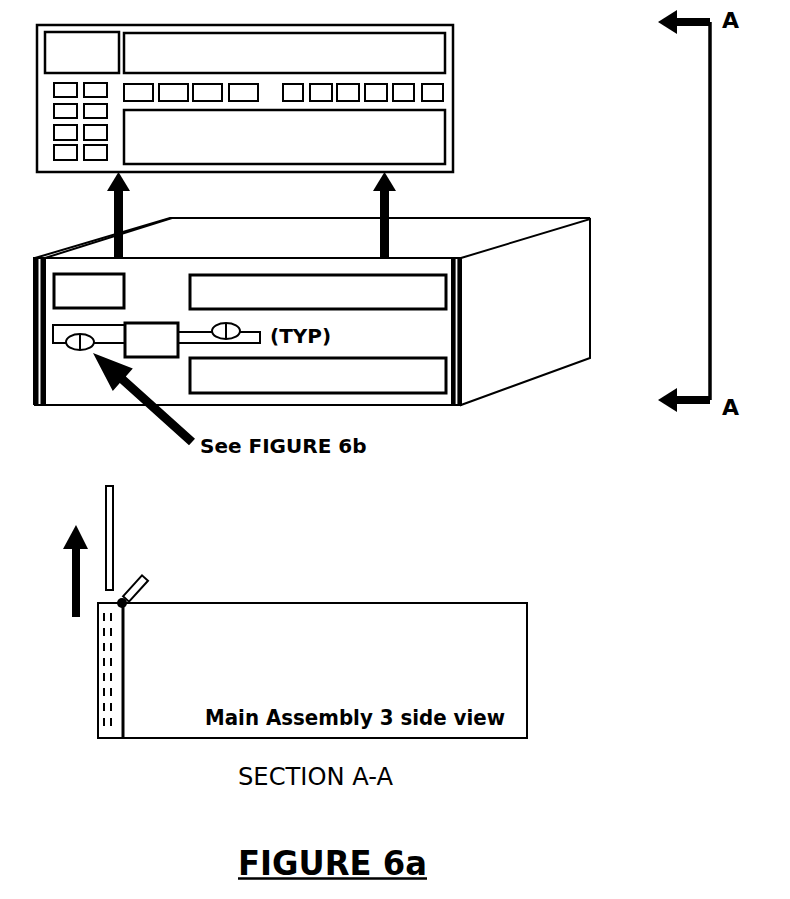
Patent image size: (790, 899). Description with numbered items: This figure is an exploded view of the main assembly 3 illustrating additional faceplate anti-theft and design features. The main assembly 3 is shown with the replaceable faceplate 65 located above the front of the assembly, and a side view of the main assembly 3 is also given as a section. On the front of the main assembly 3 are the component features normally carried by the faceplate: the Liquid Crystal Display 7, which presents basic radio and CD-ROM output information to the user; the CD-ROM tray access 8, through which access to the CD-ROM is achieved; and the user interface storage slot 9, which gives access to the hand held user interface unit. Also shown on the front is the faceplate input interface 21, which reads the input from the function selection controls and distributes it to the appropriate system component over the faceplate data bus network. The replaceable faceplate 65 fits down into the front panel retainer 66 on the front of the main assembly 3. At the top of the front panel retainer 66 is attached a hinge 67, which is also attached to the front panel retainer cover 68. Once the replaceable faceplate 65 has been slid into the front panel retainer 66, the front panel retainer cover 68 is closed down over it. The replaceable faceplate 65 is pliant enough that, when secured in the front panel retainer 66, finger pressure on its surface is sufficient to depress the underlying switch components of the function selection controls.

The main assembly 3 is at (311, 312).
The Liquid Crystal Display (LCD) 7 is at (89, 291).
The CD-ROM tray access 8 is at (318, 292).
The user interface storage slot 9 is at (318, 375).
The faceplate input interface 21 is at (156, 340).
The replaceable faceplate 65 is at (262, 307).
The front panel retainer 66 is at (94, 673).
The hinge 67 is at (161, 626).
The front panel retainer cover 68 is at (154, 580).